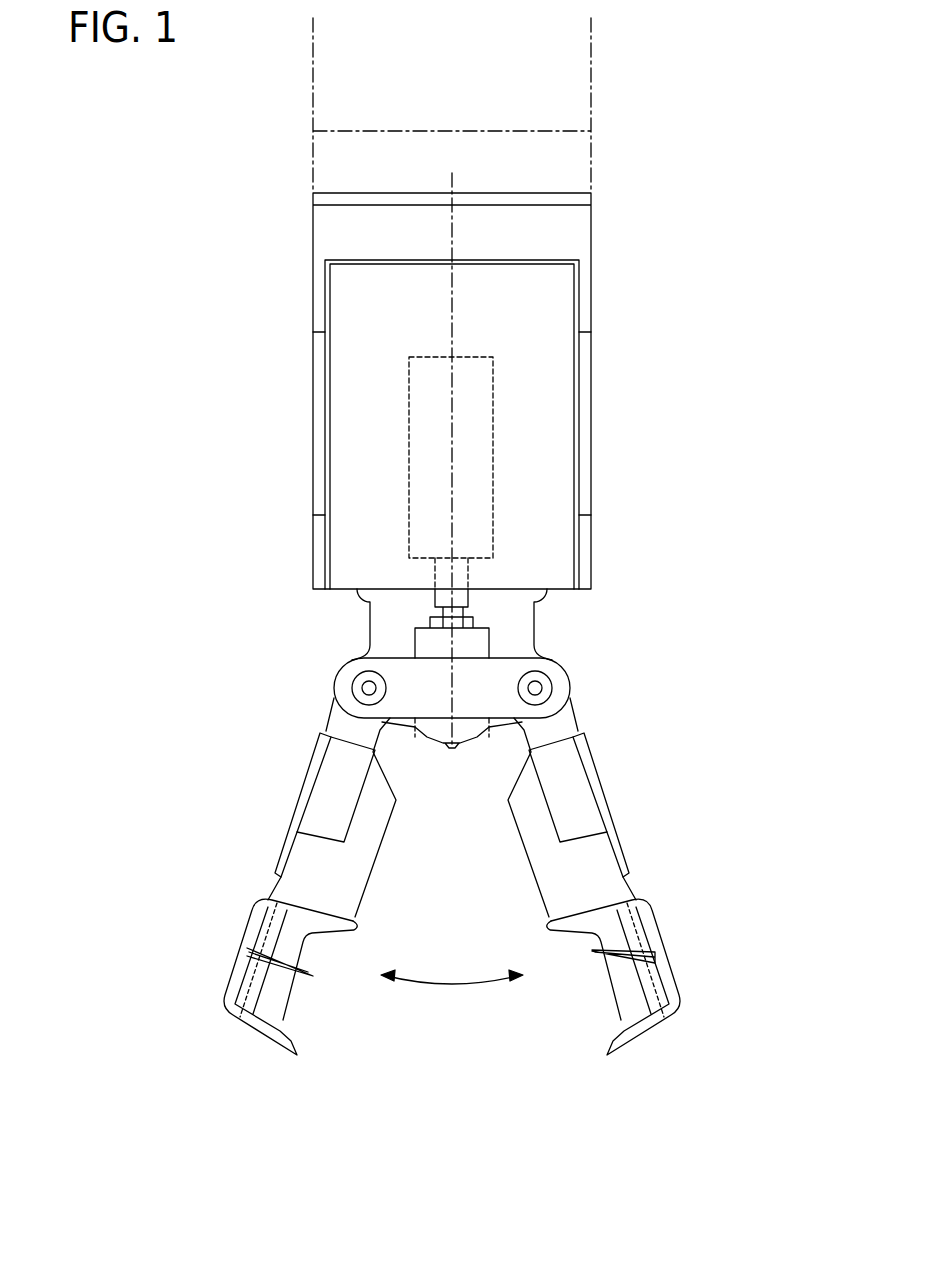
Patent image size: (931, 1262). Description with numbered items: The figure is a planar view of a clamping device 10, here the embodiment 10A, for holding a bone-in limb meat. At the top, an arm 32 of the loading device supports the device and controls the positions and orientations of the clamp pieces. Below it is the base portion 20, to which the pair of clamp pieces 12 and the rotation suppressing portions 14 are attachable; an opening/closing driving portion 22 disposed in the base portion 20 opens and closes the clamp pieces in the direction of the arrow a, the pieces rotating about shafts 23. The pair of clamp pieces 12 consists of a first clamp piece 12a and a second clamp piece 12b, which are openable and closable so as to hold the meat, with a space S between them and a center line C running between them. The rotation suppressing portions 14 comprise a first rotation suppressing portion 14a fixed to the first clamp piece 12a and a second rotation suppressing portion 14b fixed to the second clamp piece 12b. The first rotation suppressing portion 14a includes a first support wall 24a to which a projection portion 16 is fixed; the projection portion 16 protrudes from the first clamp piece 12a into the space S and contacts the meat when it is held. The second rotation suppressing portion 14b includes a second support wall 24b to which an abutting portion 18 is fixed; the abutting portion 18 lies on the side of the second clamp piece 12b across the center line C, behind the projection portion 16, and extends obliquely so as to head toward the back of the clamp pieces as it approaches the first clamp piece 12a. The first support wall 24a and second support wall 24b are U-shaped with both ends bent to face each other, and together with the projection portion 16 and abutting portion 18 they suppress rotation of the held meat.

The clamping device 10 is at (454, 567).
The clamping device 10A is at (454, 567).
The clamp pieces 12 is at (454, 807).
The first clamp piece 12a is at (277, 853).
The second clamp piece 12b is at (627, 853).
The rotation suppressing portions 14 is at (454, 950).
The first rotation suppressing portion 14a is at (234, 961).
The second rotation suppressing portion 14b is at (673, 960).
The projection portion 16 is at (310, 977).
The abutting portion 18 is at (593, 953).
The base portion 20 is at (313, 370).
The opening/closing driving portion 22 is at (409, 457).
The shafts 23 is at (369, 688).
The first support wall 24a is at (250, 927).
The second support wall 24b is at (681, 990).
The arm 32 is at (313, 73).
The center line C is at (452, 222).
The space S is at (467, 867).
The opening/closing direction a is at (465, 978).